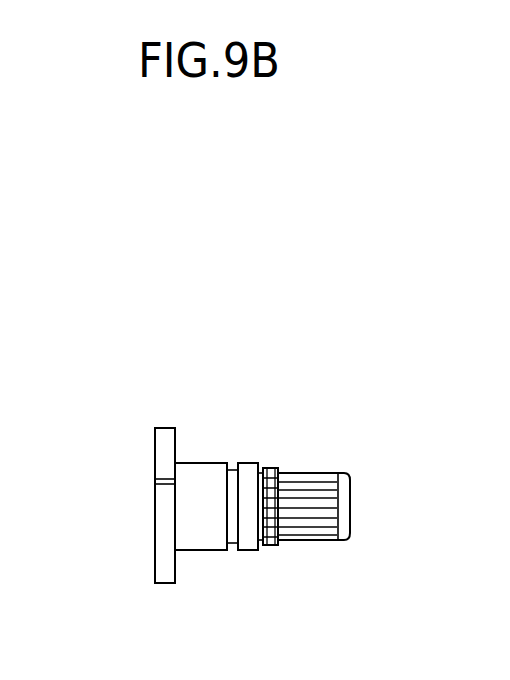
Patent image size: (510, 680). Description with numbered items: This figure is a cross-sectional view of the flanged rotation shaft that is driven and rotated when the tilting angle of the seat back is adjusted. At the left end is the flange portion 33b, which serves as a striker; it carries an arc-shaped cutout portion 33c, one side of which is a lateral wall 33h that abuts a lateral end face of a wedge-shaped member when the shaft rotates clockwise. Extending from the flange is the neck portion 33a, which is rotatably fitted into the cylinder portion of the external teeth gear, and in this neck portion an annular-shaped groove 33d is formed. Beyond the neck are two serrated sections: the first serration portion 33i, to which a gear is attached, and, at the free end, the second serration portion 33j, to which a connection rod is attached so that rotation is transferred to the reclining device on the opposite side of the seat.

The neck portion 33a is at (203, 472).
The flange portion 33b is at (167, 428).
The arc-shaped cutout portion 33c is at (170, 583).
The annular-shaped groove 33d is at (232, 547).
The lateral wall 33h is at (157, 479).
The first serration portion 33i is at (269, 468).
The second serration portion 33j is at (293, 475).